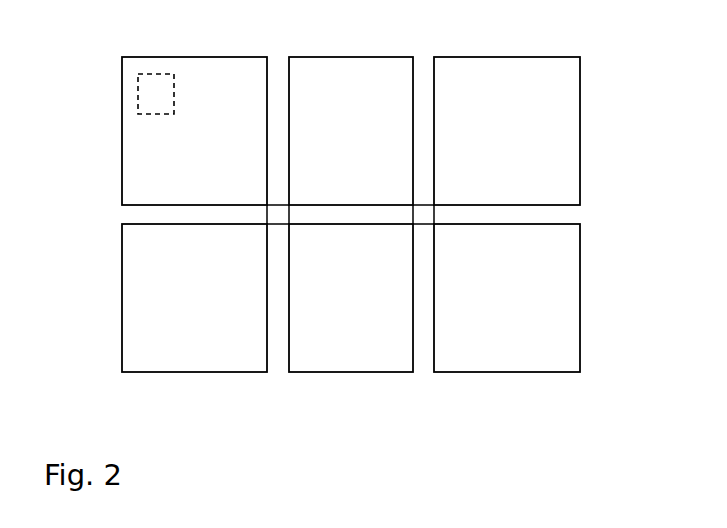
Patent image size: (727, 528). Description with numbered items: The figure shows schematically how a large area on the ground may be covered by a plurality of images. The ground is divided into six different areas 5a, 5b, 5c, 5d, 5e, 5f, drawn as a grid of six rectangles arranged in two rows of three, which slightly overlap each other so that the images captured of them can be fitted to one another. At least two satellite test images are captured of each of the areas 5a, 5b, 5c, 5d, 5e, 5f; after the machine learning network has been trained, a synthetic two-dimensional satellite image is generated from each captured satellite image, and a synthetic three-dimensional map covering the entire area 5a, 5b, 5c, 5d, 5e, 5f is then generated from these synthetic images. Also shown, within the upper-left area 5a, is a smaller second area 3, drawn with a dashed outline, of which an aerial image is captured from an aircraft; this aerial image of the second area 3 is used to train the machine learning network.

The second area 3 is at (150, 96).
The sensor segment 5a is at (176, 158).
The sensor segment 5b is at (331, 158).
The sensor segment 5c is at (492, 158).
The sensor segment 5d is at (170, 312).
The sensor segment 5e is at (331, 312).
The sensor segment 5f is at (486, 312).